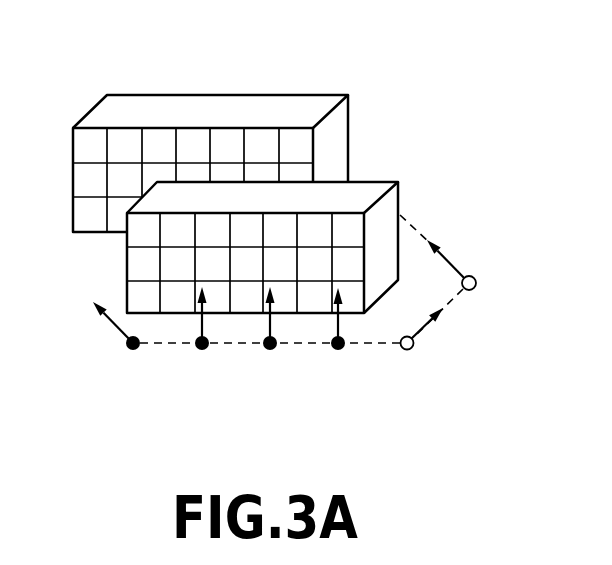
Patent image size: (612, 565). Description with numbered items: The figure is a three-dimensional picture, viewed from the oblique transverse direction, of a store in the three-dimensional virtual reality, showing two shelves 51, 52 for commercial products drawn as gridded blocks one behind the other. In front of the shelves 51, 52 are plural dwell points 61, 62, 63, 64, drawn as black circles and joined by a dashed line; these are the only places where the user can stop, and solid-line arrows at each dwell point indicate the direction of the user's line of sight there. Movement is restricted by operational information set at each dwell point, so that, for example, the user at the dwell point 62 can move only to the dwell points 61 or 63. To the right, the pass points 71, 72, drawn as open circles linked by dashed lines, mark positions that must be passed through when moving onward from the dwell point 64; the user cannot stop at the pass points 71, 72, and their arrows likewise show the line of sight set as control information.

The shelf for commercial products 51 is at (242, 108).
The shelf for commercial products 52 is at (353, 197).
The dwell point 61 is at (135, 350).
The dwell point 62 is at (203, 350).
The dwell point 63 is at (272, 350).
The dwell point 64 is at (340, 350).
The pass point 71 is at (412, 347).
The pass point 72 is at (476, 278).